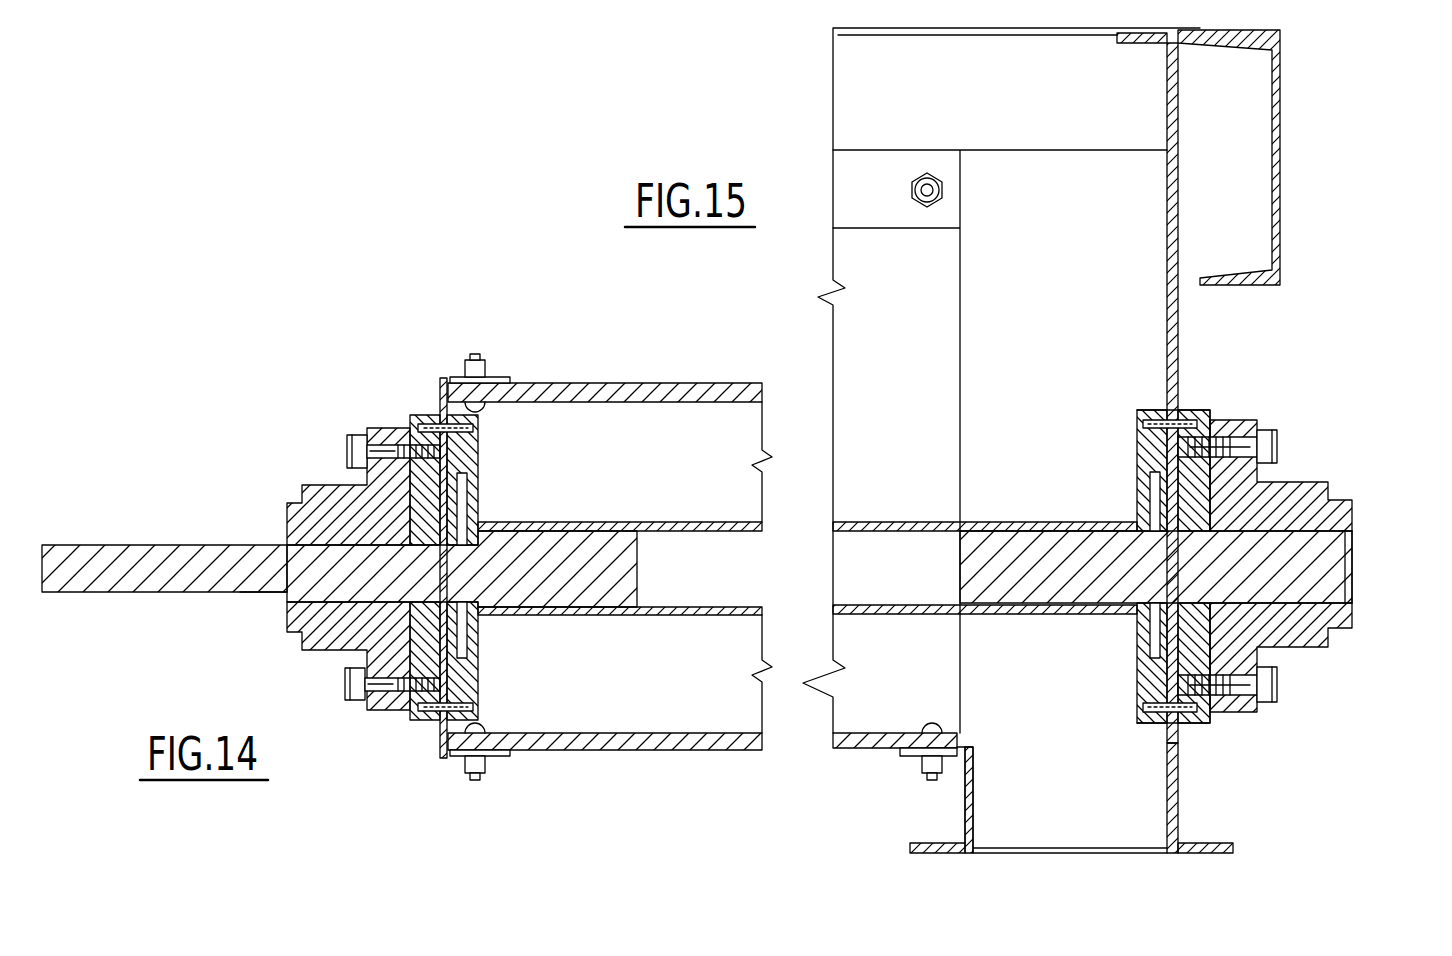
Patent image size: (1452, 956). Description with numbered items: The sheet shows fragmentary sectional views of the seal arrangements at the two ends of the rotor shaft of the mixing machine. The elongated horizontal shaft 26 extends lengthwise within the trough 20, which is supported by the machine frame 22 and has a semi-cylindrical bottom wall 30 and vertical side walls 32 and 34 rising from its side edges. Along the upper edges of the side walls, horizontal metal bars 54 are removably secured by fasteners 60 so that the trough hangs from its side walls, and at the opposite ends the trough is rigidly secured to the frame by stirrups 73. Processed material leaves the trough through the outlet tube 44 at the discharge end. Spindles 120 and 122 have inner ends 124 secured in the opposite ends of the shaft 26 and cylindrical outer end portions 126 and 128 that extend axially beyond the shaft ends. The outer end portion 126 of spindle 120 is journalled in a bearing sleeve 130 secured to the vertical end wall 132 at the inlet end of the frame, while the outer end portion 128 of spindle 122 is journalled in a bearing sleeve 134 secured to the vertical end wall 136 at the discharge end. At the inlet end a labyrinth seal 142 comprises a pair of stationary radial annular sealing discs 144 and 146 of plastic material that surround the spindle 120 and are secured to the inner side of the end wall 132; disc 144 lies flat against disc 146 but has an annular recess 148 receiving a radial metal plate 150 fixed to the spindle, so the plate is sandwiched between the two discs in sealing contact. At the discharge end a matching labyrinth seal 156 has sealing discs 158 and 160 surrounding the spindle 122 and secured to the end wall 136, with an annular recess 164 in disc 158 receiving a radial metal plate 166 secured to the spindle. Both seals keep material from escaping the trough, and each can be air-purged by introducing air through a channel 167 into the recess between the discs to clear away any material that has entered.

In FIG. 14, the trough 20 is at (603, 383).
In FIG. 15, the trough 20 is at (826, 754).
In FIG. 15, the machine frame 22 is at (1302, 148).
In FIG. 14, the shaft 26 is at (708, 522).
In FIG. 15, the shaft 26 is at (876, 522).
In FIG. 15, the bottom wall 30 is at (880, 752).
In FIG. 14, the side wall 32 is at (712, 752).
In FIG. 14, the side wall 34 is at (692, 383).
In FIG. 15, the outlet tube 44 is at (1180, 788).
In FIG. 15, the bar 54 is at (881, 160).
In FIG. 15, the fastener 60 is at (940, 190).
In FIG. 14, the stirrup 73 is at (493, 378).
In FIG. 15, the stirrup 73 is at (916, 758).
In FIG. 14, the spindle 120 is at (176, 532).
In FIG. 15, the spindle 122 is at (1364, 541).
In FIG. 14, the inner end 124 is at (598, 533).
In FIG. 15, the inner end 124 is at (1000, 531).
In FIG. 14, the outer end portion 126 is at (248, 592).
In FIG. 15, the outer end portion 128 is at (1352, 583).
In FIG. 14, the bearing sleeve 130 is at (338, 485).
In FIG. 14, the end wall 132 is at (440, 386).
In FIG. 15, the bearing sleeve 134 is at (1277, 482).
In FIG. 15, the end wall 136 is at (1182, 363).
In FIG. 14, the labyrinth seal 142 is at (497, 465).
In FIG. 14, the sealing disc 144 is at (478, 485).
In FIG. 14, the sealing disc 146 is at (432, 403).
In FIG. 14, the annular recess 148 is at (478, 512).
In FIG. 14, the radial metal plate 150 is at (478, 614).
In FIG. 15, the labyrinth seal 156 is at (1121, 679).
In FIG. 15, the sealing disc 158 is at (1137, 455).
In FIG. 15, the sealing disc 160 is at (1163, 410).
In FIG. 15, the annular recess 164 is at (1137, 622).
In FIG. 15, the radial metal plate 166 is at (1150, 510).
In FIG. 14, the channel 167 is at (478, 668).
In FIG. 15, the channel 167 is at (1290, 645).